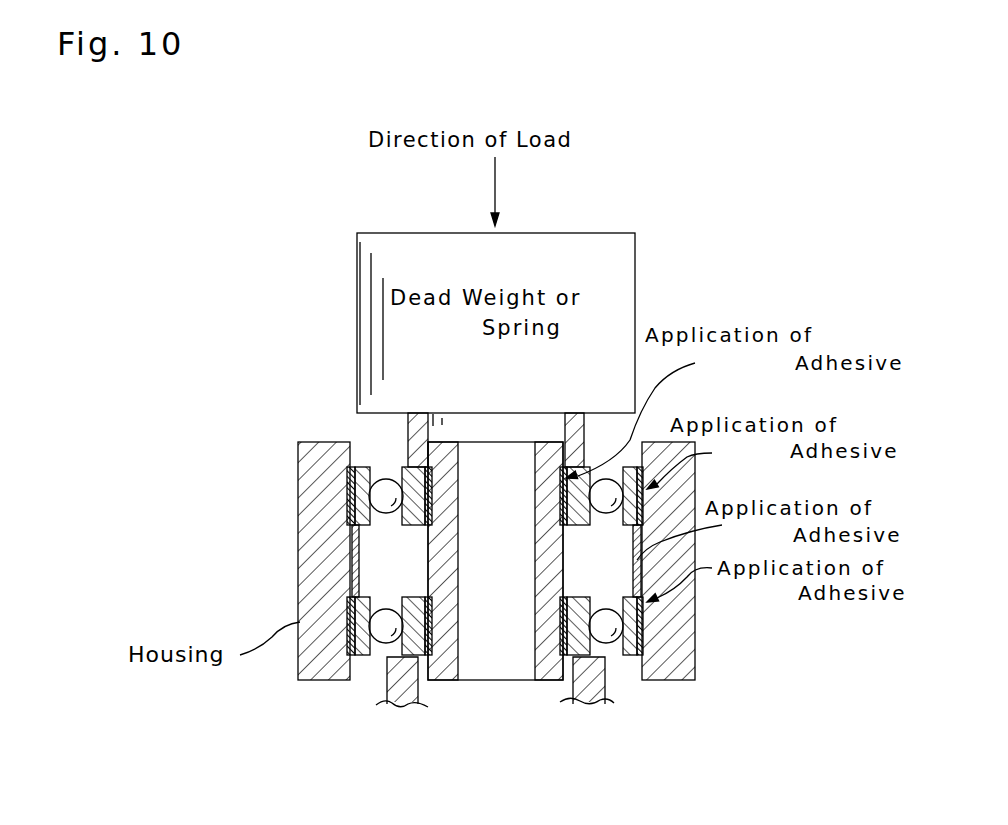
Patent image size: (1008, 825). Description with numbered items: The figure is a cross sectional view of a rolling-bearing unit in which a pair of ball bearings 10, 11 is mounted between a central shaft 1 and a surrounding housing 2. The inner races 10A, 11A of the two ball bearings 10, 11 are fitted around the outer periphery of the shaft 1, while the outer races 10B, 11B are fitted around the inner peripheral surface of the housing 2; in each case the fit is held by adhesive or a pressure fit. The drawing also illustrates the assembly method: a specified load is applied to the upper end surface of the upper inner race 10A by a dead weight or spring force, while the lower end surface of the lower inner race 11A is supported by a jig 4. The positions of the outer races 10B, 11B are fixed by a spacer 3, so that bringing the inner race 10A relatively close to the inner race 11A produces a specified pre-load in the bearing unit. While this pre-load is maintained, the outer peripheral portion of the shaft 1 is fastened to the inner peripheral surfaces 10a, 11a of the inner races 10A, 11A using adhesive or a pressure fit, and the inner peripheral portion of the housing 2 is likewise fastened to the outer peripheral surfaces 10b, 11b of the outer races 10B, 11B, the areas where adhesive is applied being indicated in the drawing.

The shaft 1 is at (548, 670).
The housing 2 is at (695, 662).
The spacer 3 is at (357, 569).
The jig 4 is at (593, 692).
The ball bearing 10 is at (428, 547).
The inner race 10A is at (366, 452).
The outer race 10B is at (348, 467).
The inner peripheral surface 10a is at (562, 517).
The outer peripheral surface 10b is at (348, 504).
The ball bearing 11 is at (425, 698).
The inner race 11A is at (416, 657).
The outer race 11B is at (356, 656).
The inner peripheral surface 11a is at (444, 652).
The outer peripheral surface 11b is at (350, 637).